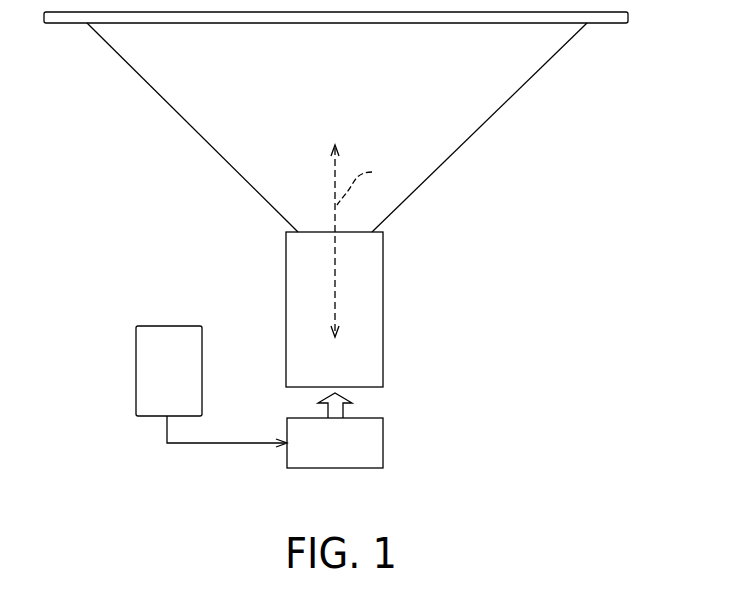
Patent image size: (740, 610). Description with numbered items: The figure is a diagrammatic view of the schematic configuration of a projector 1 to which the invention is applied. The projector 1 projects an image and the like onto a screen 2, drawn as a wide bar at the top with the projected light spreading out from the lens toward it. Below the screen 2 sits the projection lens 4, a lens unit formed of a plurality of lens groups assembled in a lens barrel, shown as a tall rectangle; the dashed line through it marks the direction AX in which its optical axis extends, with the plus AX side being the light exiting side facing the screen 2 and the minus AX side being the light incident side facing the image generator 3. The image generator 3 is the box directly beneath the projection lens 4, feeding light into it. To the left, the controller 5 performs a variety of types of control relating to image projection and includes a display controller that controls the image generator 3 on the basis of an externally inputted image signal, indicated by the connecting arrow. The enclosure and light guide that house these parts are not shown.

The projector 1 is at (155, 272).
The screen 2 is at (612, 27).
The image generator 3 is at (388, 440).
The projection lens 4 is at (388, 292).
The controller 5 is at (130, 388).